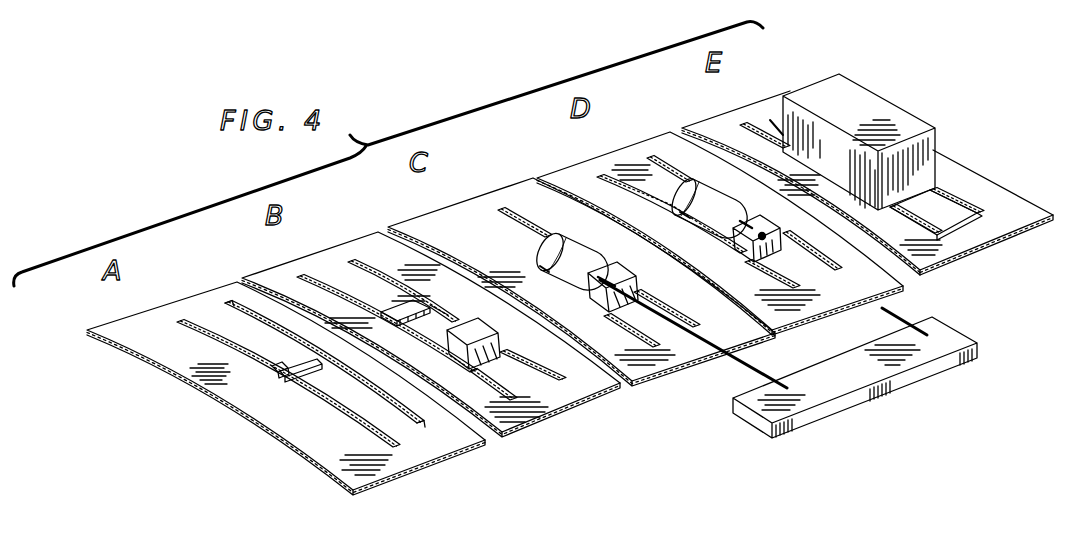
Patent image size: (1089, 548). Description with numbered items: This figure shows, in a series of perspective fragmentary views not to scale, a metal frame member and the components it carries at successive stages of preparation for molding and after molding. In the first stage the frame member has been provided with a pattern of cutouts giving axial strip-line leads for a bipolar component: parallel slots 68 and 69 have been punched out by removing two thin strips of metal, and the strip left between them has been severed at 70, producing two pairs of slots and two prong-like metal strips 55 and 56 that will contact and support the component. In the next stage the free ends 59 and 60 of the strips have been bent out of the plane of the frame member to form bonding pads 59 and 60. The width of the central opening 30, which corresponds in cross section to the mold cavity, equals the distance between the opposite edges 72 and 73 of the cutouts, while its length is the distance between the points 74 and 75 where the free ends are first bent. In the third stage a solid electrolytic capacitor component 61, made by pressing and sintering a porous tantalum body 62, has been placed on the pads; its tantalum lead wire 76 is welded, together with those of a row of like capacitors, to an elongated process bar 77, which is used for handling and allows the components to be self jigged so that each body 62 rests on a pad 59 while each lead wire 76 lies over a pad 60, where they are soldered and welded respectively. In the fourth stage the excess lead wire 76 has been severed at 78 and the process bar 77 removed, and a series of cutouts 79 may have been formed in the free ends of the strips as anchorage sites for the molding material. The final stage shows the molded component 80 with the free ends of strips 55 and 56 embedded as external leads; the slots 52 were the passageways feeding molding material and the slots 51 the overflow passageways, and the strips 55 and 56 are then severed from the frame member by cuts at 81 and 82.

The central opening 30 is at (437, 357).
The slots 51 is at (755, 129).
The slots 52 is at (952, 222).
The metal strip 55 is at (223, 333).
The metal strip 56 is at (345, 410).
The bonding pad 59 is at (440, 300).
The bonding pad 60 is at (489, 334).
The solid electrolytic capacitor component 61 is at (607, 271).
The porous tantalum body 62 is at (591, 237).
The slot 68 is at (417, 424).
The slot 69 is at (232, 305).
The severance point 70 is at (275, 378).
The cutout edge 72 is at (442, 312).
The cutout edge 73 is at (378, 337).
The bend point 74 is at (382, 293).
The bend point 75 is at (492, 368).
The tantalum lead wire 76 is at (755, 372).
The process bar 77 is at (948, 337).
The severance point of lead wire 78 is at (733, 230).
The cutouts 79 is at (778, 231).
The molded component 80 is at (870, 107).
The cut 81 is at (770, 120).
The cut 82 is at (997, 236).